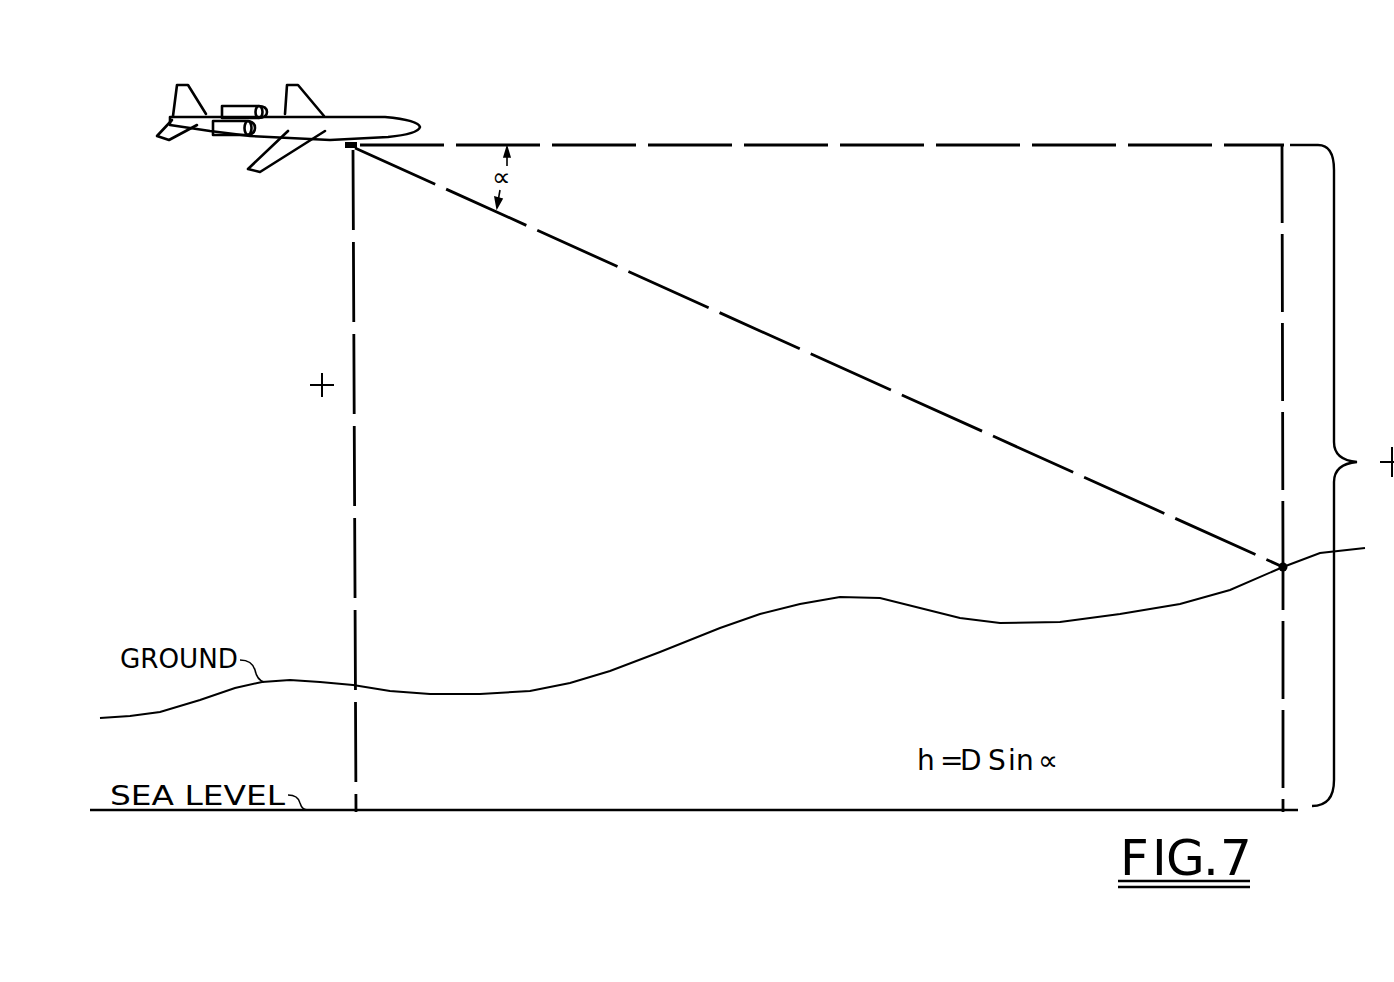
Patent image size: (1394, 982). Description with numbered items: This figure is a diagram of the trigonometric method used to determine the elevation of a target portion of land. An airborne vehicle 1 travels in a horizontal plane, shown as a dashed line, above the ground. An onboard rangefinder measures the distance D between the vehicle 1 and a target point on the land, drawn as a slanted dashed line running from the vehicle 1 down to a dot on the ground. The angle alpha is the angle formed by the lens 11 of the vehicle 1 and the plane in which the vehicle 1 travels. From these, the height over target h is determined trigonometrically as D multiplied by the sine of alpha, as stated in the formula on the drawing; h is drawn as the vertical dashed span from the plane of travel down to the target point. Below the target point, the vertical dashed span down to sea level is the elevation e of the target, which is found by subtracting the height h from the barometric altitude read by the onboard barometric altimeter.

The vehicle 1 is at (385, 118).
The lens 11 is at (350, 148).
The distance D is at (792, 341).
The height over target h is at (1284, 336).
The elevation e is at (1284, 726).